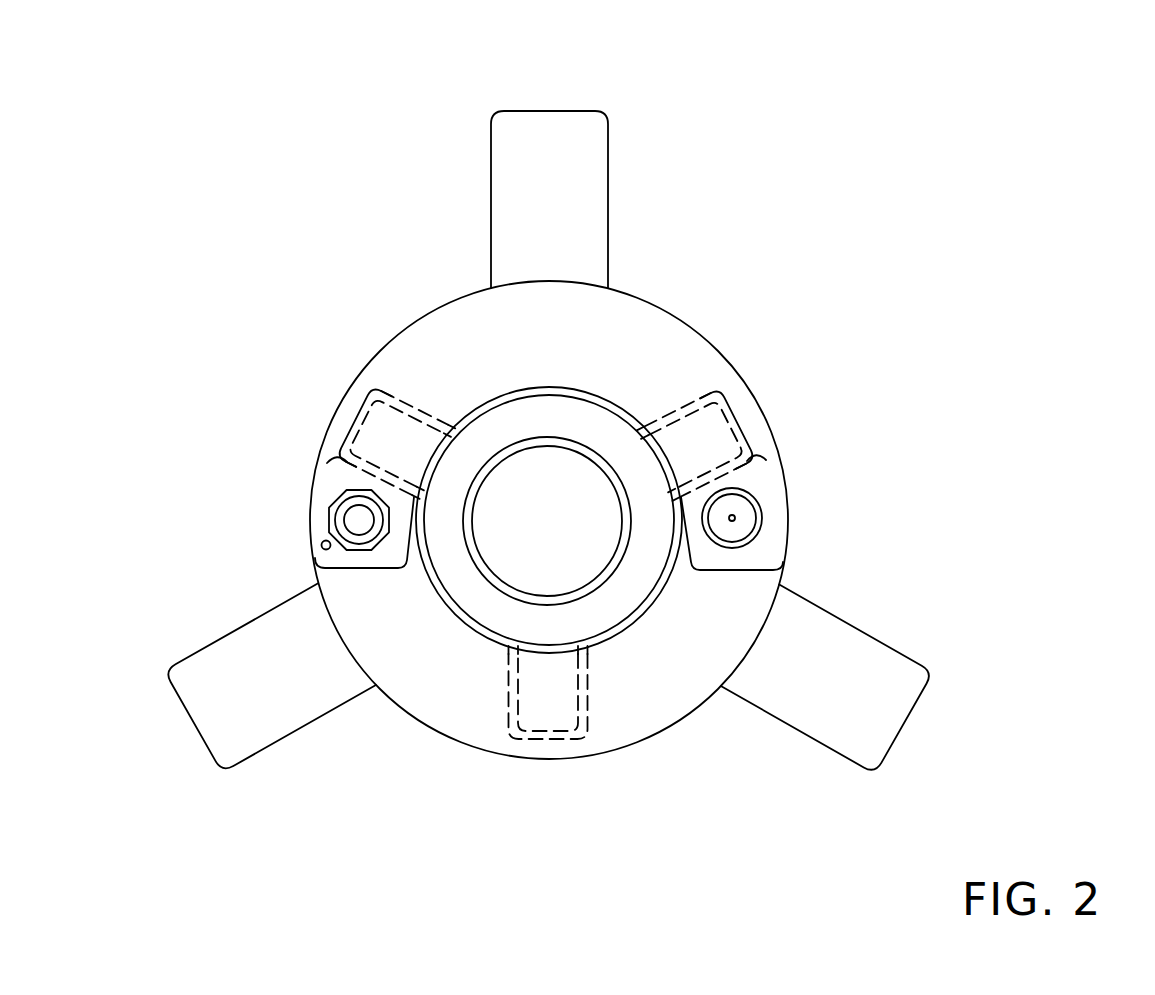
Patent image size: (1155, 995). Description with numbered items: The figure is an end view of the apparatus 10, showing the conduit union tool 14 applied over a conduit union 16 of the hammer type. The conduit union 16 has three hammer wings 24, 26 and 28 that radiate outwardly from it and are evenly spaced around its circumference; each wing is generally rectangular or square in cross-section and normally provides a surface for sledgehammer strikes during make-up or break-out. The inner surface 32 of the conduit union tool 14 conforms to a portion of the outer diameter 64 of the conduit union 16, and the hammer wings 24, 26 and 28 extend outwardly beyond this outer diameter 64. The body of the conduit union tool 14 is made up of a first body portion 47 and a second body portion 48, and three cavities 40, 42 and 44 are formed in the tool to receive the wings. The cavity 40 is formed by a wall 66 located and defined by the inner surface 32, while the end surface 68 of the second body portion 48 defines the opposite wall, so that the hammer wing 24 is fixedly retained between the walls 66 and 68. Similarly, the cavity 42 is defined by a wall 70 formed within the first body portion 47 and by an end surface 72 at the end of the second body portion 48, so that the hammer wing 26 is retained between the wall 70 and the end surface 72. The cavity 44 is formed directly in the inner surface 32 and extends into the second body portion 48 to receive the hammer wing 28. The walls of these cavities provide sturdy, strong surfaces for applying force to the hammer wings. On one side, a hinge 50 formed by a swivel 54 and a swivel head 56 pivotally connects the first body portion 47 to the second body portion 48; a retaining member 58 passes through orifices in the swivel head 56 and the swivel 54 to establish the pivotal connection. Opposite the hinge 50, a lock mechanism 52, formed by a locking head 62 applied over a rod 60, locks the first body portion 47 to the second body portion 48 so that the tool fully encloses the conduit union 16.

The apparatus 10 is at (770, 195).
The conduit union tool 14 is at (626, 316).
The conduit union 16 is at (482, 600).
The hammer wing 24 is at (390, 440).
The hammer wing 26 is at (747, 432).
The hammer wing 28 is at (545, 698).
The inner surface 32 is at (495, 643).
The cavity 40 is at (371, 410).
The cavity 42 is at (737, 427).
The cavity 44 is at (563, 740).
The first body portion 47 is at (437, 305).
The second body portion 48 is at (692, 722).
The hinge 50 is at (340, 508).
The lock mechanism 52 is at (762, 517).
The swivel 54 is at (359, 520).
The swivel head 56 is at (340, 495).
The retaining member 58 is at (322, 549).
The rod 60 is at (728, 522).
The locking head 62 is at (760, 536).
The outer diameter 64 is at (477, 627).
The wall 66 is at (366, 398).
The end surface 68 is at (320, 468).
The wall 70 is at (717, 388).
The end surface 72 is at (737, 467).